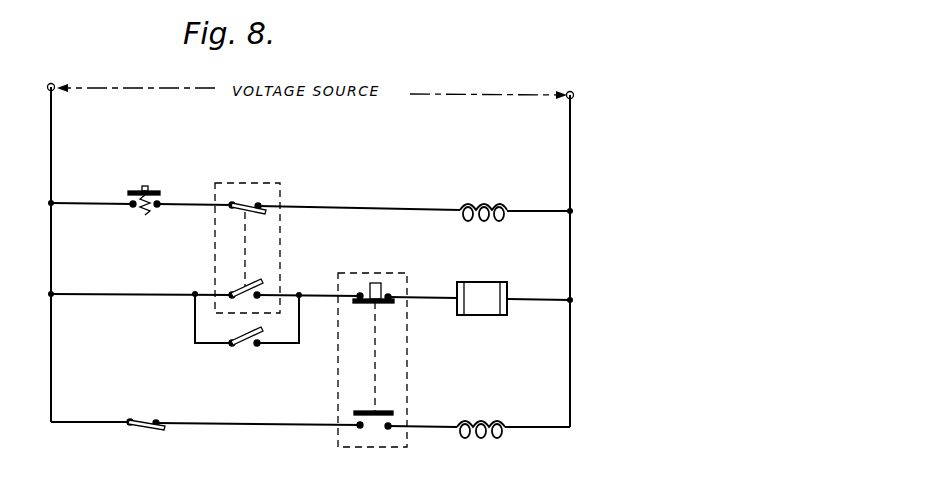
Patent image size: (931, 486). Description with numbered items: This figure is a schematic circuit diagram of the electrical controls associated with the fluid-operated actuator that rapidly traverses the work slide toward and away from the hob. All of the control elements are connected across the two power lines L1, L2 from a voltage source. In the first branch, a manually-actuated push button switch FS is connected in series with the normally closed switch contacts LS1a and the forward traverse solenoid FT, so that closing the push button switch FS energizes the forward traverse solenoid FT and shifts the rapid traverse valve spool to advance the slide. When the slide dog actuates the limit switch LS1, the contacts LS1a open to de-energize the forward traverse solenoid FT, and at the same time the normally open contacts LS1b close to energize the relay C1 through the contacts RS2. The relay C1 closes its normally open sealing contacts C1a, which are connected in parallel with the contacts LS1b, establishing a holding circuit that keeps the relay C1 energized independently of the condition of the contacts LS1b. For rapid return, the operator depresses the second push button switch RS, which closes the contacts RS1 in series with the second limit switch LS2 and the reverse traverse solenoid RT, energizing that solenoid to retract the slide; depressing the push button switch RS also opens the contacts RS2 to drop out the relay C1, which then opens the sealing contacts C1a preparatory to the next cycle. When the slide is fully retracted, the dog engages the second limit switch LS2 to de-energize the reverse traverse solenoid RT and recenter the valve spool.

The power line L1 is at (54, 125).
The power line L2 is at (567, 138).
The manually-actuated push button switch FS is at (145, 190).
The limit switch LS1 is at (286, 181).
The switch contacts LS1a is at (250, 202).
The normally open switch contacts LS1b is at (274, 270).
The sealing contacts C1a is at (245, 348).
The push button switch RS is at (400, 272).
The switch contacts RS1 is at (373, 430).
The switch contacts RS2 is at (386, 304).
The second limit switch LS2 is at (149, 417).
The forward traverse solenoid FT is at (477, 202).
The reverse traverse solenoid RT is at (484, 424).
The relay C1 is at (484, 288).